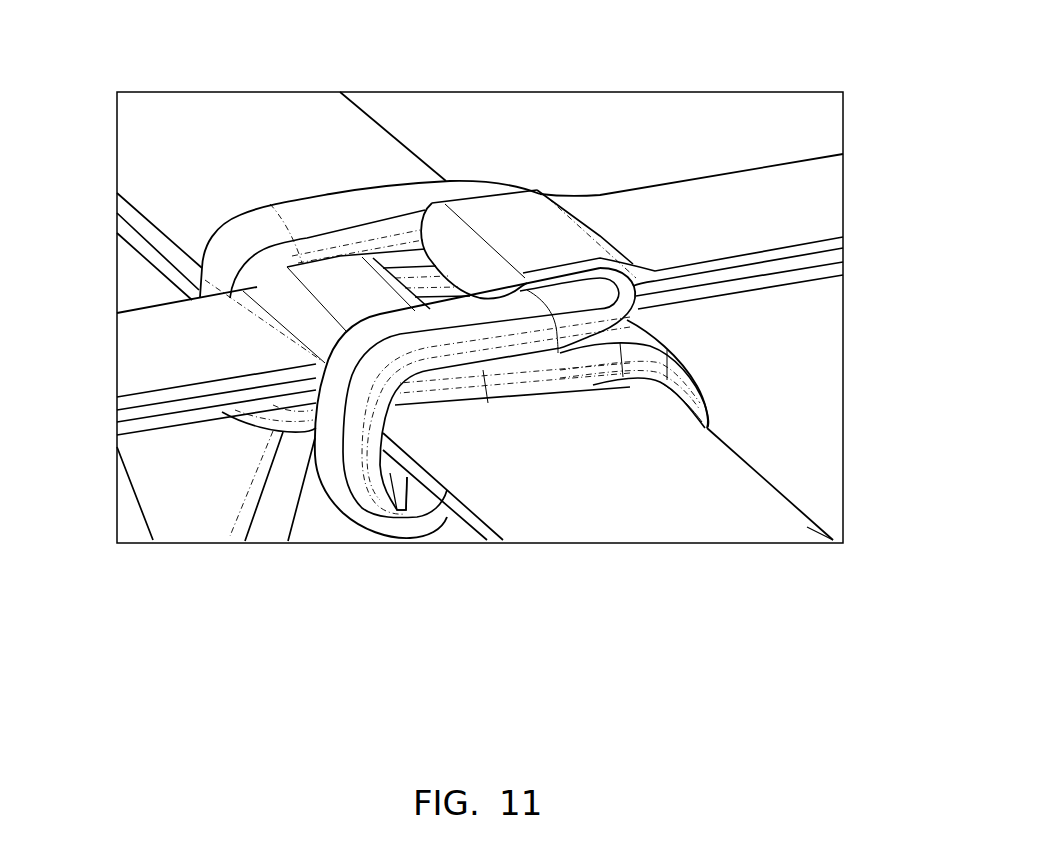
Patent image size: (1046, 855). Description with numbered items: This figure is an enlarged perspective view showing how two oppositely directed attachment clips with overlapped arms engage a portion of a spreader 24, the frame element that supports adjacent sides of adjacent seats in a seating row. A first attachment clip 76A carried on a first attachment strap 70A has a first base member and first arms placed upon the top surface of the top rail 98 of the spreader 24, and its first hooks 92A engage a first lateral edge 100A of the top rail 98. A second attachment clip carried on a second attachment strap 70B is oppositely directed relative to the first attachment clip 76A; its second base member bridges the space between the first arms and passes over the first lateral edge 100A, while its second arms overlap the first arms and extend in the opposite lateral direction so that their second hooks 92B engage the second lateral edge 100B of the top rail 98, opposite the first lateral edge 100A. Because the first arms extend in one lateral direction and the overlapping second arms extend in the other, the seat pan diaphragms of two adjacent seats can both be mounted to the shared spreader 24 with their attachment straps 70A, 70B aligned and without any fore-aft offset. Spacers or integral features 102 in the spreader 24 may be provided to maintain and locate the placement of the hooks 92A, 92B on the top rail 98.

The spreader 24 is at (210, 490).
The first attachment strap 70A is at (168, 337).
The second attachment strap 70B is at (735, 197).
The first attachment clip 76A is at (628, 432).
The first hooks 92A is at (705, 377).
The second hooks 92B is at (238, 243).
The top rail 98 is at (723, 483).
The first lateral edge 100A is at (807, 527).
The second lateral edge 100B is at (473, 523).
The spacers or integral features 102 is at (420, 500).